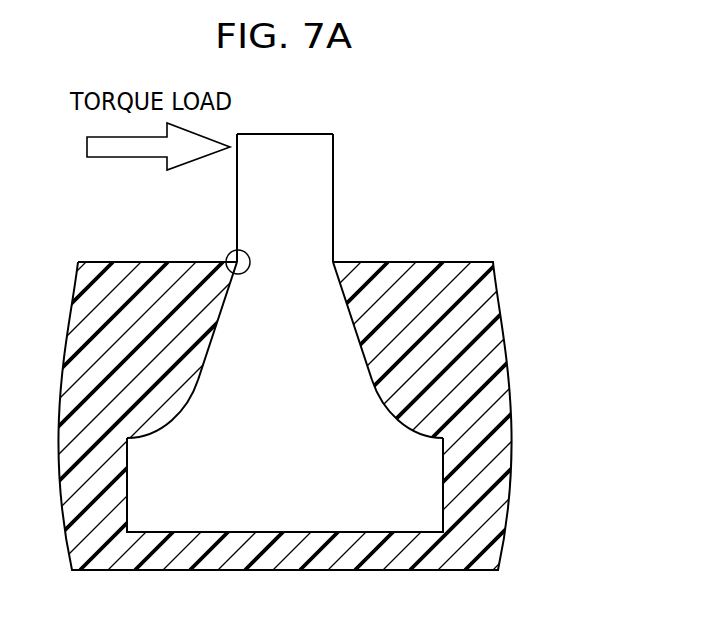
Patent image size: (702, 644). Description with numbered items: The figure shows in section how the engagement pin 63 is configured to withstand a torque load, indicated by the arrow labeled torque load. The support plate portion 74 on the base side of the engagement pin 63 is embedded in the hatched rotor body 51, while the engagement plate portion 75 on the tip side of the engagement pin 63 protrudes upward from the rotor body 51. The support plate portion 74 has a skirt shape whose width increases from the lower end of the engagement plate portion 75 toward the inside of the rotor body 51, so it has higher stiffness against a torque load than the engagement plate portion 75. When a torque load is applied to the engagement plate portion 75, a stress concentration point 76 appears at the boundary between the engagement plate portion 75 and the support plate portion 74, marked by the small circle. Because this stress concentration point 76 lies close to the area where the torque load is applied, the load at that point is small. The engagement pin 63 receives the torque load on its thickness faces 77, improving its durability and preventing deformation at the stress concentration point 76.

The rotor body 51 is at (451, 272).
The engagement pin 63 is at (361, 126).
The support plate portion 74 is at (340, 340).
The engagement plate portion 75 is at (318, 154).
The stress concentration point 76 is at (229, 254).
The thickness faces 77 is at (220, 313).